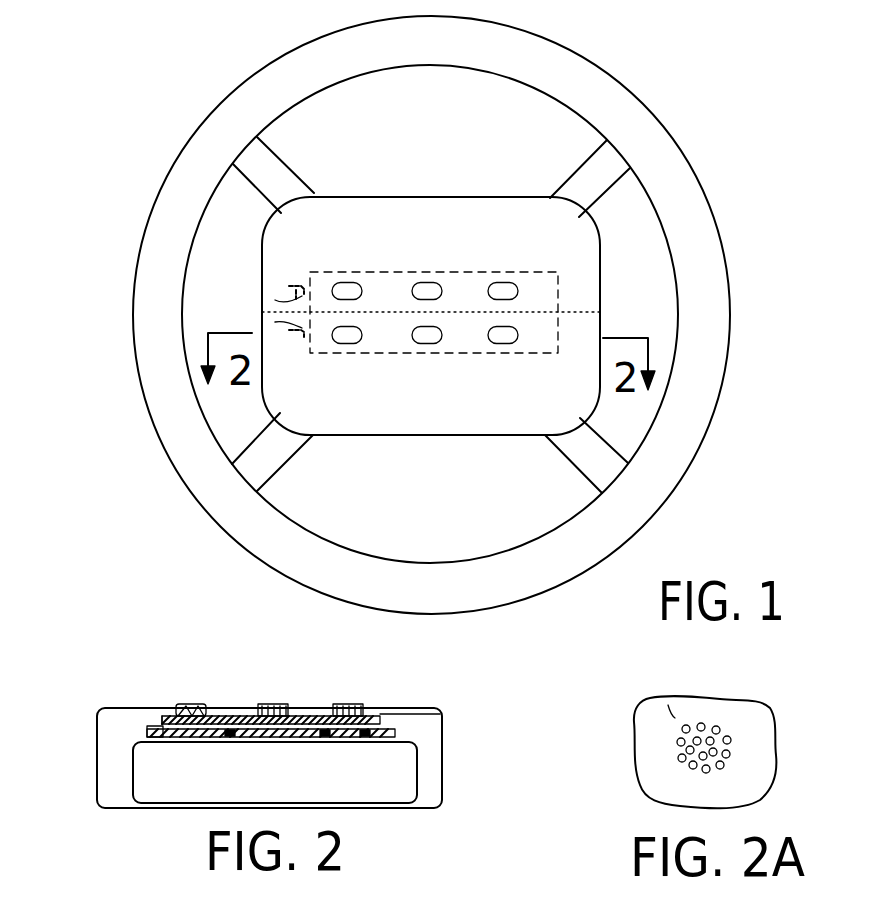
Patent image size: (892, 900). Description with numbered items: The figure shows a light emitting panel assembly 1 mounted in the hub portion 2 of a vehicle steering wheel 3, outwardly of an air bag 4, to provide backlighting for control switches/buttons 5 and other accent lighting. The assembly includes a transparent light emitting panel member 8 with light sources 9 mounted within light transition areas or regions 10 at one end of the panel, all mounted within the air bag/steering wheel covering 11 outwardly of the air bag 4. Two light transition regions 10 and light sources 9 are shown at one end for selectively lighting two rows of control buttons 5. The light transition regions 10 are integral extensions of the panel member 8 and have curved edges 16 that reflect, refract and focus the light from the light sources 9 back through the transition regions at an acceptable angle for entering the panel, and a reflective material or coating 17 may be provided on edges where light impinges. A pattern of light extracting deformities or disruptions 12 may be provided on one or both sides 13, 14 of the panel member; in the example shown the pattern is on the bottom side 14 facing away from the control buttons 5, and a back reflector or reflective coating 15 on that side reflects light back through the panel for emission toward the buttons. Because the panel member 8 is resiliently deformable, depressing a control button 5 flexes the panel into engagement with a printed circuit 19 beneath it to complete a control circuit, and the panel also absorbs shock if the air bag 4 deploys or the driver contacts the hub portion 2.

In FIG. 1, the light emitting panel assembly 1 is at (393, 266).
In FIG. 2, the light emitting panel assembly 1 is at (150, 712).
In FIG. 1, the hub portion 2 is at (470, 205).
In FIG. 2, the hub portion 2 is at (415, 710).
In FIG. 1, the steering wheel 3 is at (606, 62).
In FIG. 2, the air bag 4 is at (410, 774).
In FIG. 1, the control switches/buttons 5 is at (434, 284).
In FIG. 2, the control switches/buttons 5 is at (270, 704).
In FIG. 1, the light emitting panel member 8 is at (480, 283).
In FIG. 2, the light emitting panel member 8 is at (312, 718).
In FIG. 2A, the light emitting panel member 8 is at (760, 716).
In FIG. 1, the light source 9 is at (298, 287).
In FIG. 2, the light source 9 is at (180, 716).
In FIG. 1, the light transition area or region 10 is at (302, 290).
In FIG. 2, the light transition area or region 10 is at (165, 736).
In FIG. 1, the air bag/steering wheel covering 11 is at (402, 424).
In FIG. 2, the air bag/steering wheel covering 11 is at (383, 712).
In FIG. 2A, the light extracting deformities or disruptions 12 is at (716, 726).
In FIG. 2, the side of panel member 13 is at (240, 717).
In FIG. 2, the bottom side of panel member 14 is at (243, 738).
In FIG. 2A, the bottom side of panel member 14 is at (676, 714).
In FIG. 2, the back reflector or reflective coating 15 is at (214, 725).
In FIG. 1, the curved edges 16 is at (277, 322).
In FIG. 1, the reflective material or coating 17 is at (277, 300).
In FIG. 2, the printed circuit 19 is at (332, 738).